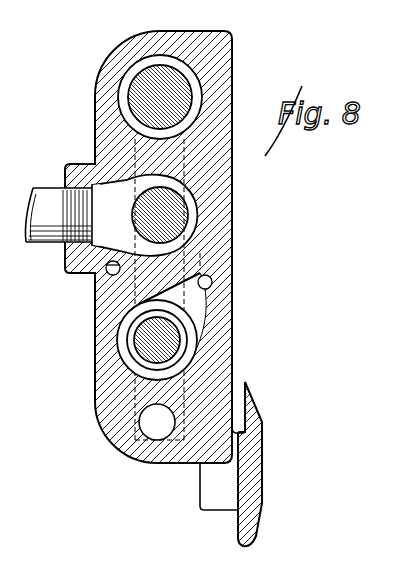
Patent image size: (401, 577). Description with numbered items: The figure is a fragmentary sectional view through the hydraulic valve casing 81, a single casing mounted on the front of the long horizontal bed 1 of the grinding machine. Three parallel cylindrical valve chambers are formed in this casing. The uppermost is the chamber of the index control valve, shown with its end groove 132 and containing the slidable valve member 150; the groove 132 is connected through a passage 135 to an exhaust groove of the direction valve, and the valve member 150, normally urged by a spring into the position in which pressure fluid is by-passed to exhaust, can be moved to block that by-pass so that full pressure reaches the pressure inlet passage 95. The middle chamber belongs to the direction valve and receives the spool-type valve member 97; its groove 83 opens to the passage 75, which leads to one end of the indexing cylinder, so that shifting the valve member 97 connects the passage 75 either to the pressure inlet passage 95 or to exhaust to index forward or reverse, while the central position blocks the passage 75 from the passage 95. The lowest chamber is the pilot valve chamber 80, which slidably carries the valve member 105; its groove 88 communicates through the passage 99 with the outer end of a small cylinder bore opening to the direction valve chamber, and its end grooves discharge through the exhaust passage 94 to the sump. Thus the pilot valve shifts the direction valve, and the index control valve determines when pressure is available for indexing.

The bed 1 is at (262, 464).
The passage 75 is at (34, 189).
The pilot valve chamber 80 is at (200, 325).
The casing 81 is at (230, 77).
The groove 83 is at (200, 215).
The groove 88 is at (190, 358).
The exhaust passage 94 is at (156, 441).
The pressure inlet passage 95 is at (107, 276).
The valve member 97 is at (186, 200).
The passage 99 is at (212, 281).
The valve member 105 is at (138, 335).
The groove 132 is at (122, 86).
The passage 135 is at (185, 143).
The valve member 150 is at (152, 72).